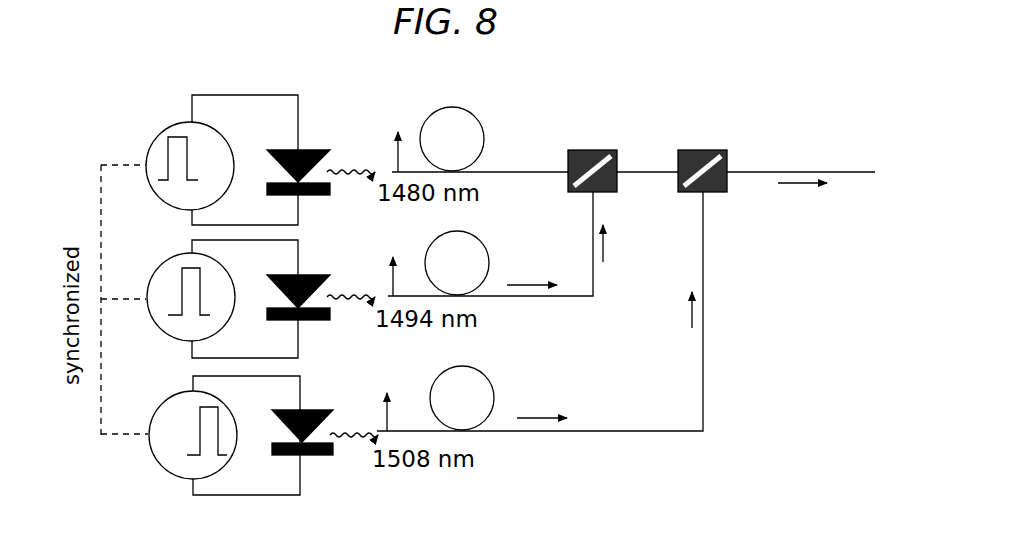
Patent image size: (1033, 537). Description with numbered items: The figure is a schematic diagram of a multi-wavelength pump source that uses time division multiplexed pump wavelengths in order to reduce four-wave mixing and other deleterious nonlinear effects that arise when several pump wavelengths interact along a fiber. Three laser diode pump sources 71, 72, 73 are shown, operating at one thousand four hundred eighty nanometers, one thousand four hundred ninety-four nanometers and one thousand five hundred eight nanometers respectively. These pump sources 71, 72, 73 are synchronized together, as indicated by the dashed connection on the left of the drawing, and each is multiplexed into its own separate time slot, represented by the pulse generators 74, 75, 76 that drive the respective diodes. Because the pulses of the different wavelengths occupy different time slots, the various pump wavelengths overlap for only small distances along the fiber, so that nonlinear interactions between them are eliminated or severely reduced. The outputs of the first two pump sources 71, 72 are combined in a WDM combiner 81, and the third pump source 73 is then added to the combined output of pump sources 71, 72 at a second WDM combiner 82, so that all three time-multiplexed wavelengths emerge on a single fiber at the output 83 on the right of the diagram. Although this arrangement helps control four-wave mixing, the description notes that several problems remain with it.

The laser diode pump source 71 is at (317, 147).
The laser diode pump source 72 is at (317, 273).
The laser diode pump source 73 is at (320, 407).
The time slot 74 is at (172, 128).
The time slot 75 is at (170, 255).
The time slot 76 is at (168, 397).
The WDM combiner 81 is at (600, 150).
The WDM combiner 82 is at (707, 150).
The output 83 is at (820, 174).